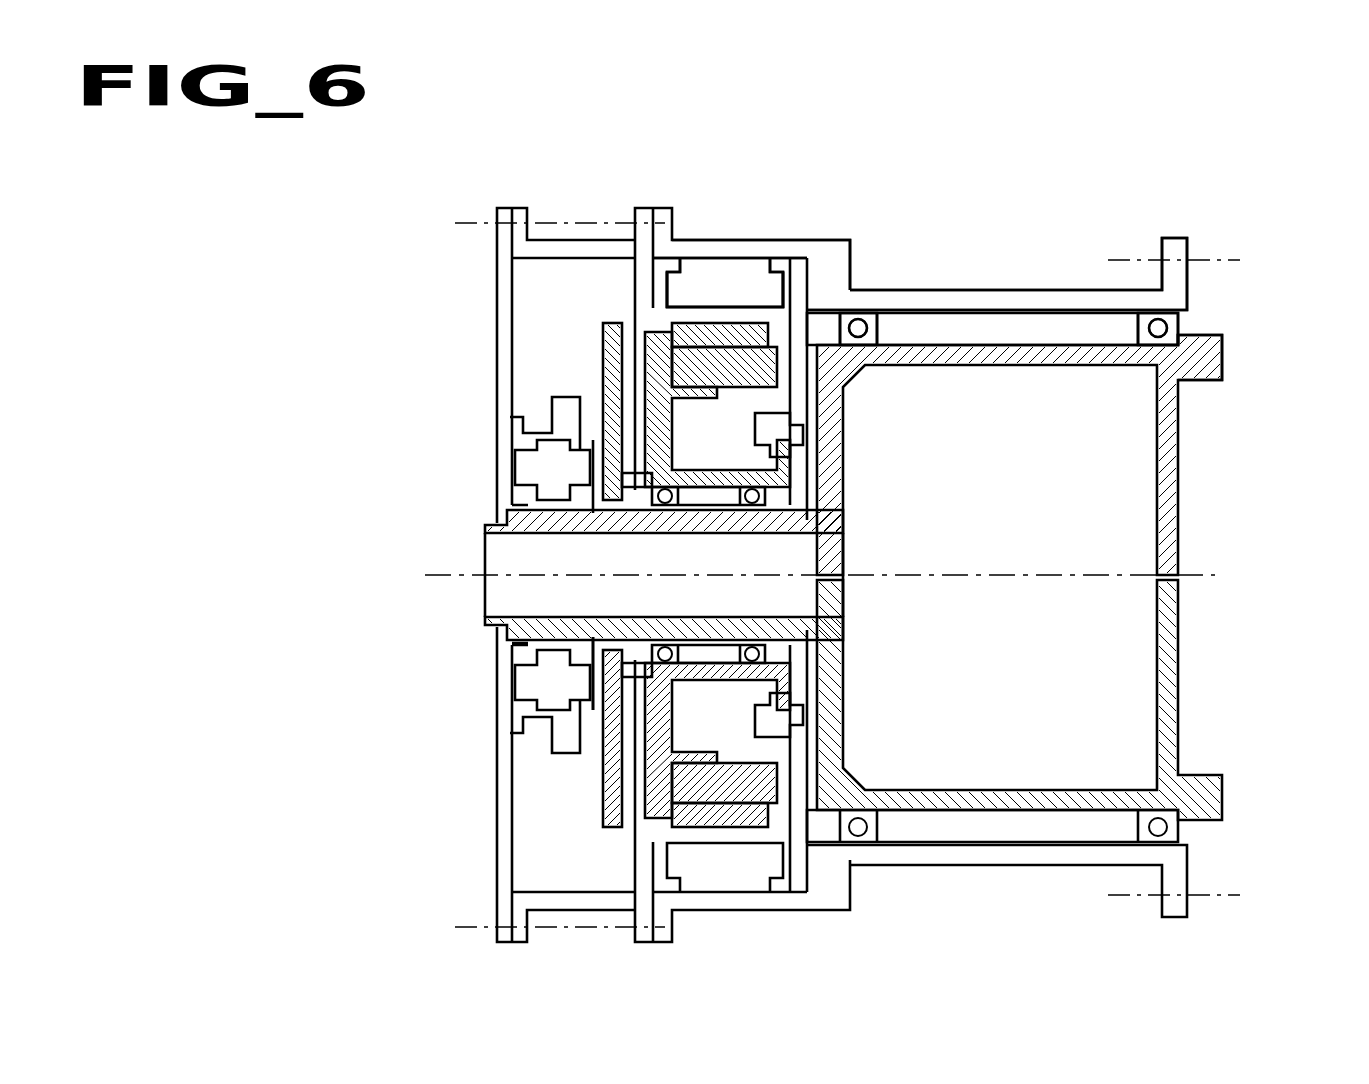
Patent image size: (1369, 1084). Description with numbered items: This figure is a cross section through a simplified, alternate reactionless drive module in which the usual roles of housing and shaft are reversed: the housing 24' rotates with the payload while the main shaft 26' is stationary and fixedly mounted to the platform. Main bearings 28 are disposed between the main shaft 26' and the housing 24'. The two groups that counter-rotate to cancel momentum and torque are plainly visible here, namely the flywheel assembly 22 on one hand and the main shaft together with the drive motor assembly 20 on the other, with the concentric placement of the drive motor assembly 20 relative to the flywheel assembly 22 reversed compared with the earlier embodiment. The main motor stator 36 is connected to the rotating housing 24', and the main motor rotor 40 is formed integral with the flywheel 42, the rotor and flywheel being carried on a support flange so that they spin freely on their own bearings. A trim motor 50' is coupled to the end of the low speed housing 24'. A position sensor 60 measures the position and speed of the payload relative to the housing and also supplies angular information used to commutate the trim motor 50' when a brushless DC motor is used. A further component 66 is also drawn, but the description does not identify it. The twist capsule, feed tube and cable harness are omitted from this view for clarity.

The drive motor assembly 20 is at (719, 268).
The main motor stator 36 is at (737, 270).
The flywheel assembly 22 is at (783, 348).
The main motor rotor 40 is at (731, 333).
The flywheel 42 is at (752, 384).
The position sensor 60 is at (597, 342).
The trim motor 50' is at (442, 448).
The spacer 66 is at (795, 460).
The main bearings 28 is at (1133, 327).
The housing 24' is at (1012, 238).
The main shaft 26' is at (1266, 302).